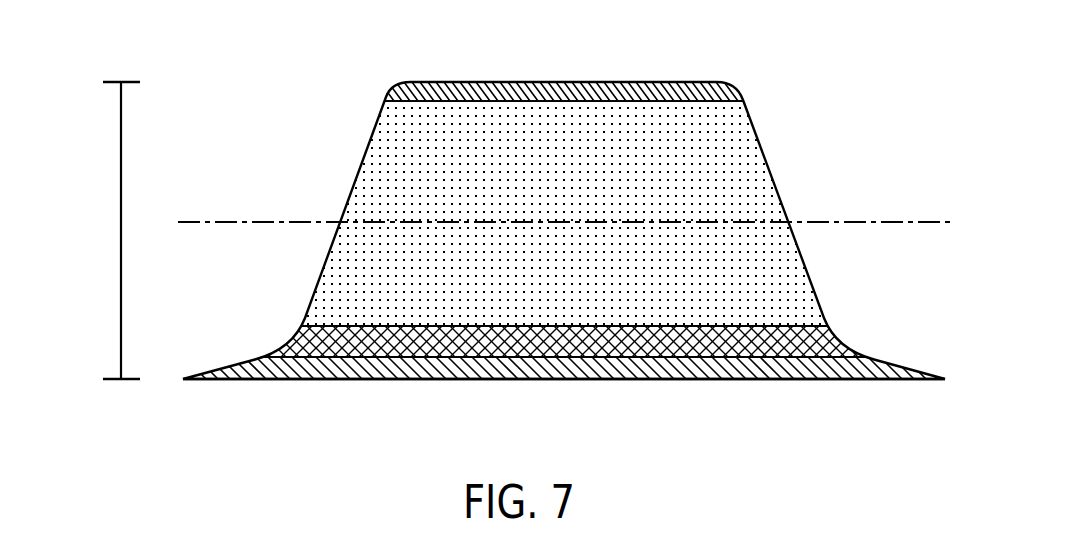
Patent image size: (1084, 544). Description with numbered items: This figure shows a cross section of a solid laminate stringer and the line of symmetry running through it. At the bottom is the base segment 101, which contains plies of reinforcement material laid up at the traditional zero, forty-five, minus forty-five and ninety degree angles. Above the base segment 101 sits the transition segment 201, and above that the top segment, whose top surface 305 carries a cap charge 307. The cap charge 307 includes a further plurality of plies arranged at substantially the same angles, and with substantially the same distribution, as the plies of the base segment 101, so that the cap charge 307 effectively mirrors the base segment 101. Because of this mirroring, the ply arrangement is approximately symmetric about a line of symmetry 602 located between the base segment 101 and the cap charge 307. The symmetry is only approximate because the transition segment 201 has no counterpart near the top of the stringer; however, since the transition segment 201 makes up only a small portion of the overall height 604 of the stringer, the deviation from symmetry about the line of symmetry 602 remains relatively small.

The base segment 101 is at (731, 372).
The transition segment 201 is at (775, 348).
The top surface 305 is at (729, 104).
The cap charge 307 is at (571, 93).
The line of symmetry 602 is at (247, 218).
The height 604 is at (121, 210).